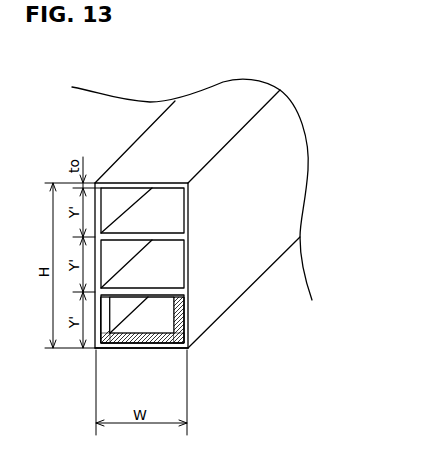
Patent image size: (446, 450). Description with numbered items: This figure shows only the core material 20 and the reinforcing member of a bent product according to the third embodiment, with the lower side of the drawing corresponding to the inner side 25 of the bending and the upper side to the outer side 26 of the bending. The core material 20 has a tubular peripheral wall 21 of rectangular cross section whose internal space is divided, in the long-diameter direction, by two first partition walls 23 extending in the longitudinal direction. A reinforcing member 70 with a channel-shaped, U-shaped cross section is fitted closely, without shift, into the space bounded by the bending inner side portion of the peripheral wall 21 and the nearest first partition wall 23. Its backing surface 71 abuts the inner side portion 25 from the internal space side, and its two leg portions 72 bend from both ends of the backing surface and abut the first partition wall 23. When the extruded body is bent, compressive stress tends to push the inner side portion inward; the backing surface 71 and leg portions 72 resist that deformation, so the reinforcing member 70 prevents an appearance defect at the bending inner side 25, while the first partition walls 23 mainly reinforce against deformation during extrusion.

The core material 20 is at (135, 143).
The peripheral wall 21 is at (122, 158).
The first partition wall 23 is at (163, 228).
The inner side of the bending 25 is at (157, 356).
The outer side of the bending 26 is at (213, 104).
The reinforcing member 70 is at (182, 303).
The backing surface 71 is at (170, 343).
The leg portion 72 is at (182, 315).